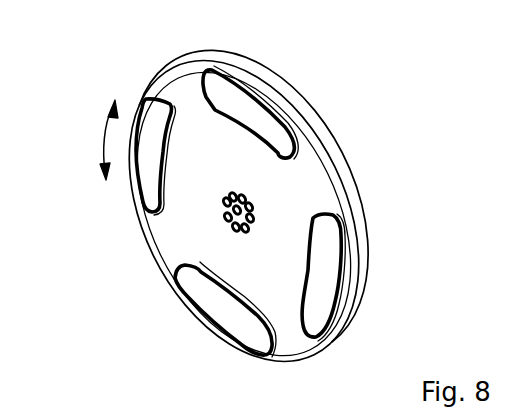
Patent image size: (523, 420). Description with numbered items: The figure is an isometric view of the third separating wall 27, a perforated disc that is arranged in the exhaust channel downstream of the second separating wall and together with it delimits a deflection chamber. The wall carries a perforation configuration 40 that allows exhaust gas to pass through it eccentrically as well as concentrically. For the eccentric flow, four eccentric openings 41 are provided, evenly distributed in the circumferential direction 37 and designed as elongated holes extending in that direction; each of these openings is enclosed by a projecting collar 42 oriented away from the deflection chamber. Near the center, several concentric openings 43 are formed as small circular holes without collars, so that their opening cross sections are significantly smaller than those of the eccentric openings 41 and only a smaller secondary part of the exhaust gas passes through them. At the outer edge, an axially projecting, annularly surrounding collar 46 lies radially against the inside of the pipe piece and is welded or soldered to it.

The third separating wall 27 is at (411, 146).
The circumferential direction 37 is at (103, 137).
The perforation configuration 40 is at (253, 205).
The eccentric openings 41 is at (247, 108).
The projecting collar 42 is at (267, 103).
The concentric openings 43 is at (223, 205).
The annularly surrounding collar 46 is at (367, 268).